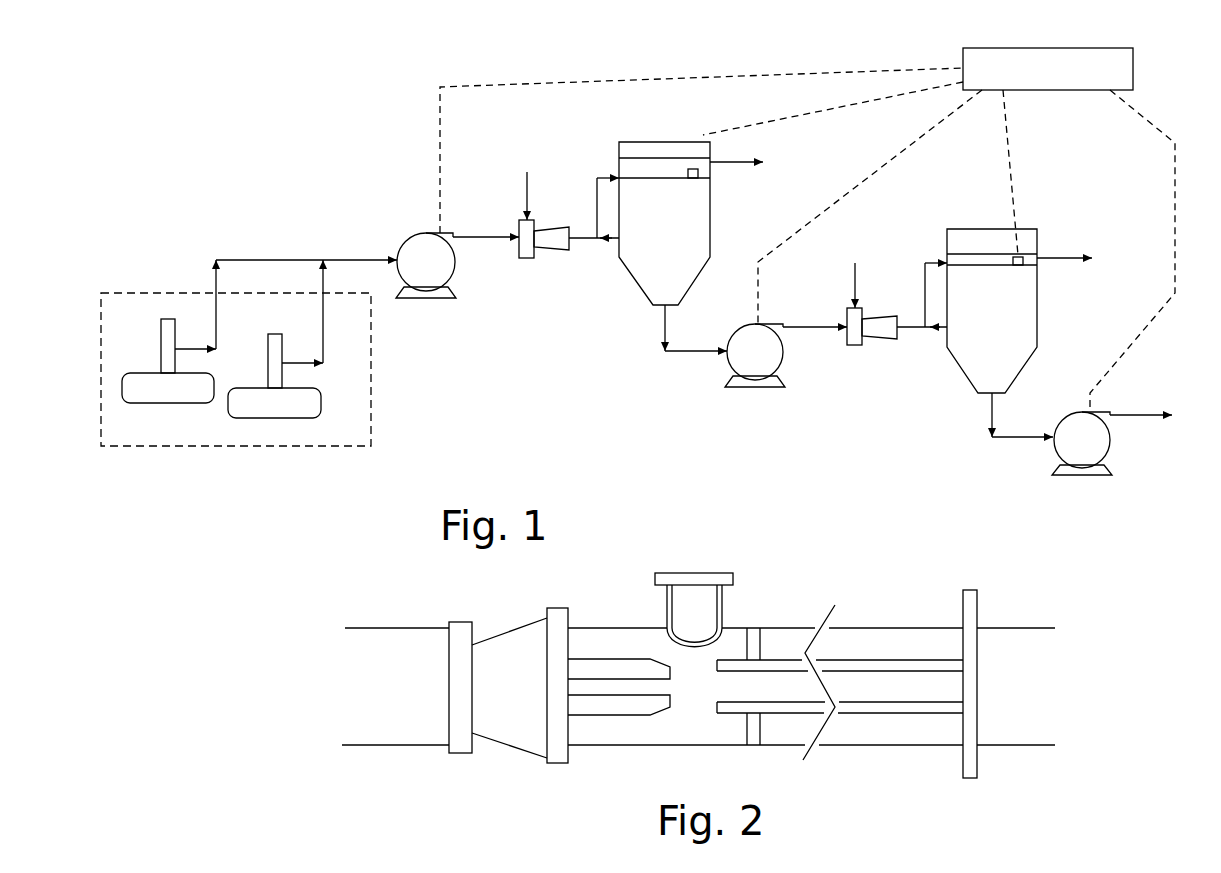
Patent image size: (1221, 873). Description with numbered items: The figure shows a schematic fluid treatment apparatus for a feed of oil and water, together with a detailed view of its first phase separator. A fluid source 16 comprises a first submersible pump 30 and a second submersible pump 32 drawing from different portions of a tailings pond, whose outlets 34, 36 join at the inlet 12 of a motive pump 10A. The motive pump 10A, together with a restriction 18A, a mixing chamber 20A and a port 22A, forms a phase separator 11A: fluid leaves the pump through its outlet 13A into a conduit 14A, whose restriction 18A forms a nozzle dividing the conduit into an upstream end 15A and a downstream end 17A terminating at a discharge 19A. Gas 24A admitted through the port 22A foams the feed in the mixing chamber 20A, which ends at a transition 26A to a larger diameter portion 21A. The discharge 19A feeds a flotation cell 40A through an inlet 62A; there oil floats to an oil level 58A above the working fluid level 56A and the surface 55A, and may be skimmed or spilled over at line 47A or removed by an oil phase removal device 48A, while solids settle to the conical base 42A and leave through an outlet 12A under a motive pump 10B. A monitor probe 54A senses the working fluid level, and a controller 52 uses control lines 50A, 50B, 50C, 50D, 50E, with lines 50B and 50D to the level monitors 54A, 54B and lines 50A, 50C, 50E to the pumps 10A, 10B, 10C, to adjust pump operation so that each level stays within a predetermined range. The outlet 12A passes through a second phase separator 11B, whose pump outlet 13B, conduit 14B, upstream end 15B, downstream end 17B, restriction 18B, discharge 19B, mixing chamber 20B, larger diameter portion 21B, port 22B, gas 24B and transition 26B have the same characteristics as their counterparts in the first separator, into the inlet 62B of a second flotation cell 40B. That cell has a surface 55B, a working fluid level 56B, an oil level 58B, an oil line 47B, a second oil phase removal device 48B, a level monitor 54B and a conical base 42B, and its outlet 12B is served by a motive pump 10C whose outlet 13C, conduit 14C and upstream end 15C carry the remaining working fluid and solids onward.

In FIG. 1, the motive pump 10A is at (433, 233).
In FIG. 1, the motive pump 10B is at (763, 385).
In FIG. 1, the motive pump 10C is at (1060, 455).
In FIG. 1, the phase separator 11A is at (417, 162).
In FIG. 1, the second phase separator 11B is at (728, 398).
In FIG. 1, the inlet 12 is at (358, 260).
In FIG. 1, the outlet 12A is at (692, 357).
In FIG. 1, the outlet 12B is at (1010, 437).
In FIG. 1, the outlet 13A is at (447, 240).
In FIG. 1, the outlet 13B is at (782, 330).
In FIG. 1, the outlet 13C is at (1107, 420).
In FIG. 1, the conduit 14A is at (500, 237).
In FIG. 1, the conduit 14B is at (827, 327).
In FIG. 1, the conduit 14C is at (1153, 418).
In FIG. 1, the upstream end 15A is at (480, 237).
In FIG. 2, the upstream end 15A is at (390, 745).
In FIG. 1, the upstream end 15B is at (807, 330).
In FIG. 1, the upstream end 15C is at (1133, 412).
In FIG. 1, the source 16 is at (372, 365).
In FIG. 1, the downstream end 17A is at (590, 235).
In FIG. 2, the downstream end 17A is at (1015, 747).
In FIG. 1, the downstream end 17B is at (913, 320).
In FIG. 1, the restriction 18A is at (533, 257).
In FIG. 2, the restriction 18A is at (618, 705).
In FIG. 1, the restriction 18B is at (860, 350).
In FIG. 1, the discharge 19A is at (610, 242).
In FIG. 1, the discharge 19B is at (940, 340).
In FIG. 1, the mixing chamber 20A is at (557, 250).
In FIG. 2, the mixing chamber 20A is at (898, 713).
In FIG. 1, the mixing chamber 20B is at (882, 335).
In FIG. 1, the larger diameter portion 21A is at (577, 165).
In FIG. 1, the larger diameter portion 21B is at (921, 266).
In FIG. 1, the port 22A is at (520, 217).
In FIG. 2, the port 22A is at (722, 612).
In FIG. 1, the port 22B is at (850, 302).
In FIG. 1, the gas 24A is at (529, 187).
In FIG. 1, the gas 24B is at (857, 270).
In FIG. 1, the transition 26A is at (575, 240).
In FIG. 2, the transition 26A is at (970, 587).
In FIG. 1, the transition 26B is at (903, 342).
In FIG. 1, the first submersible pump 30 is at (197, 403).
In FIG. 1, the second submersible pump 32 is at (322, 405).
In FIG. 1, the outlet 34 is at (190, 347).
In FIG. 1, the outlet 36 is at (300, 360).
In FIG. 1, the flotation cell 40A is at (710, 217).
In FIG. 1, the second flotation cell 40B is at (1037, 303).
In FIG. 1, the conical base 42A is at (693, 283).
In FIG. 1, the conical base 42B is at (1023, 372).
In FIG. 1, the line 47A is at (733, 162).
In FIG. 1, the line 47B is at (1060, 255).
In FIG. 1, the oil phase removal device 48A is at (698, 166).
In FIG. 1, the second oil phase removal device 48B is at (1033, 265).
In FIG. 1, the control line 50A is at (473, 85).
In FIG. 1, the control line 50B is at (818, 105).
In FIG. 1, the control line 50C is at (880, 175).
In FIG. 1, the control line 50D is at (1003, 123).
In FIG. 1, the control line 50E is at (1175, 210).
In FIG. 1, the controller 52 is at (1002, 48).
In FIG. 1, the monitor probe 54A is at (692, 178).
In FIG. 1, the level monitor 54B is at (1032, 258).
In FIG. 1, the surface 55A is at (670, 210).
In FIG. 1, the surface 55B is at (1008, 265).
In FIG. 1, the working fluid level 56A is at (658, 224).
In FIG. 1, the working fluid level 56B is at (983, 260).
In FIG. 1, the oil level 58A is at (700, 142).
In FIG. 1, the oil level 58B is at (997, 262).
In FIG. 1, the inlet 62A is at (598, 178).
In FIG. 1, the inlet 62B is at (926, 262).